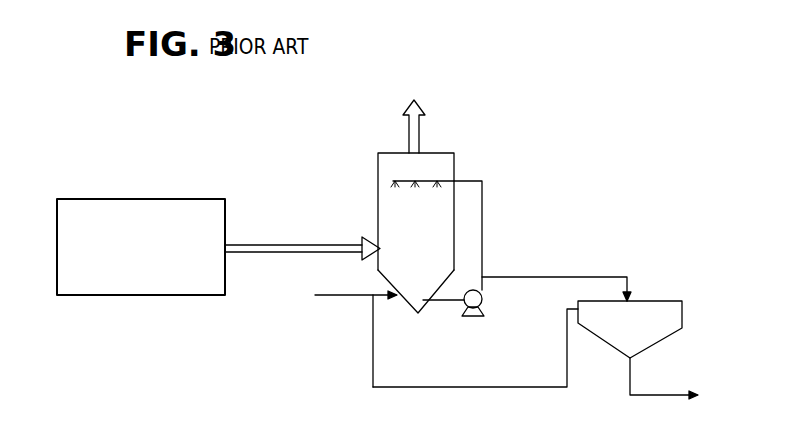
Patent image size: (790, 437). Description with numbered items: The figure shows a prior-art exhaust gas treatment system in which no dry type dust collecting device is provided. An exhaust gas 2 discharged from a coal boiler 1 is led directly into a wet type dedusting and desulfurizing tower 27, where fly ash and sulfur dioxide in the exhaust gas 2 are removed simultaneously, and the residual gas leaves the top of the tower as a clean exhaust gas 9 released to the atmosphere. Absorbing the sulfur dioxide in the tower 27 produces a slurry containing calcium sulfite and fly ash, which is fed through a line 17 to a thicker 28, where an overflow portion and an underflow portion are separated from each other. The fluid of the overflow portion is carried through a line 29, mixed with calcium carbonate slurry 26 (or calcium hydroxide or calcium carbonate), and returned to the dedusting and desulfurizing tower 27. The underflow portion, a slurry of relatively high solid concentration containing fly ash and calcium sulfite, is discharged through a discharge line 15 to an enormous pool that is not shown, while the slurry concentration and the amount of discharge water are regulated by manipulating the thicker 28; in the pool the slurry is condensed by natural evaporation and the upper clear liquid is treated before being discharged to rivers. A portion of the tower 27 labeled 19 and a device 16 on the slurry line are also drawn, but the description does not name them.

The coal boiler 1 is at (141, 212).
The exhaust gas 2 is at (302, 224).
The clean exhaust gas 9 is at (439, 126).
The wet type dedusting and desulfurizing tower 27 is at (449, 206).
The spray section / outer jacket 19 is at (465, 235).
The calcium carbonate slurry 26 is at (356, 325).
The line 17 is at (533, 297).
The pump 16 is at (471, 328).
The thicker 28 is at (639, 315).
The discharge line 15 is at (665, 374).
The line 29 is at (475, 348).